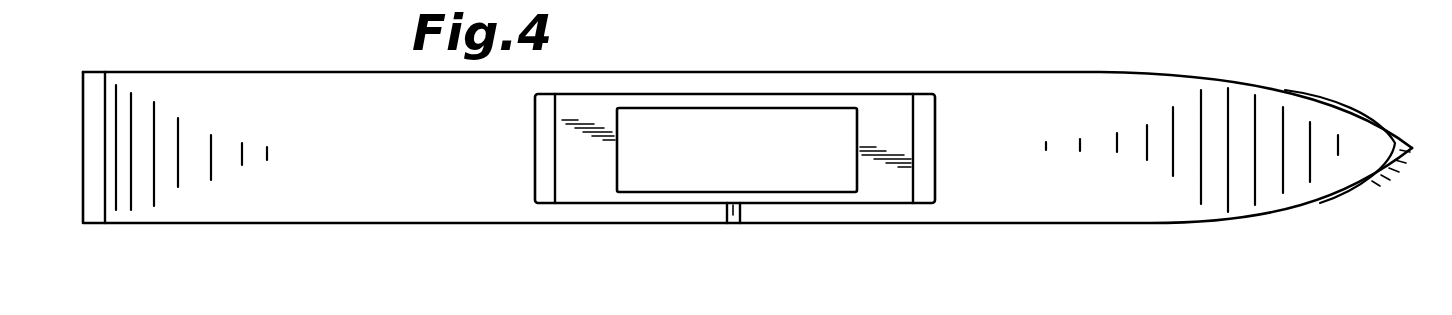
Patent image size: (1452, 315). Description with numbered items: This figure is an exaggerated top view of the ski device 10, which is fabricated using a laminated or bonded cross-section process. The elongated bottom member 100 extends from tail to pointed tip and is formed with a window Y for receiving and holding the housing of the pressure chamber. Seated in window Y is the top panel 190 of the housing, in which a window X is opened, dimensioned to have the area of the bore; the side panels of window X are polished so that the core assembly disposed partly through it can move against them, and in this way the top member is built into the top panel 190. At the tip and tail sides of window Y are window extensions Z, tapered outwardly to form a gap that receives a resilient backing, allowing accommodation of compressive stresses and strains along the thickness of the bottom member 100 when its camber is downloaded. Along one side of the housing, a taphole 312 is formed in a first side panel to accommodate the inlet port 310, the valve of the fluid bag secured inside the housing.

The ski device 10 is at (747, 118).
The bottom member 100 is at (1132, 50).
The top panel 190 is at (729, 152).
The inlet port 310 is at (722, 217).
The taphole 312 is at (744, 217).
The window X is at (772, 117).
The window Y is at (663, 93).
The window extensions Z is at (926, 102).